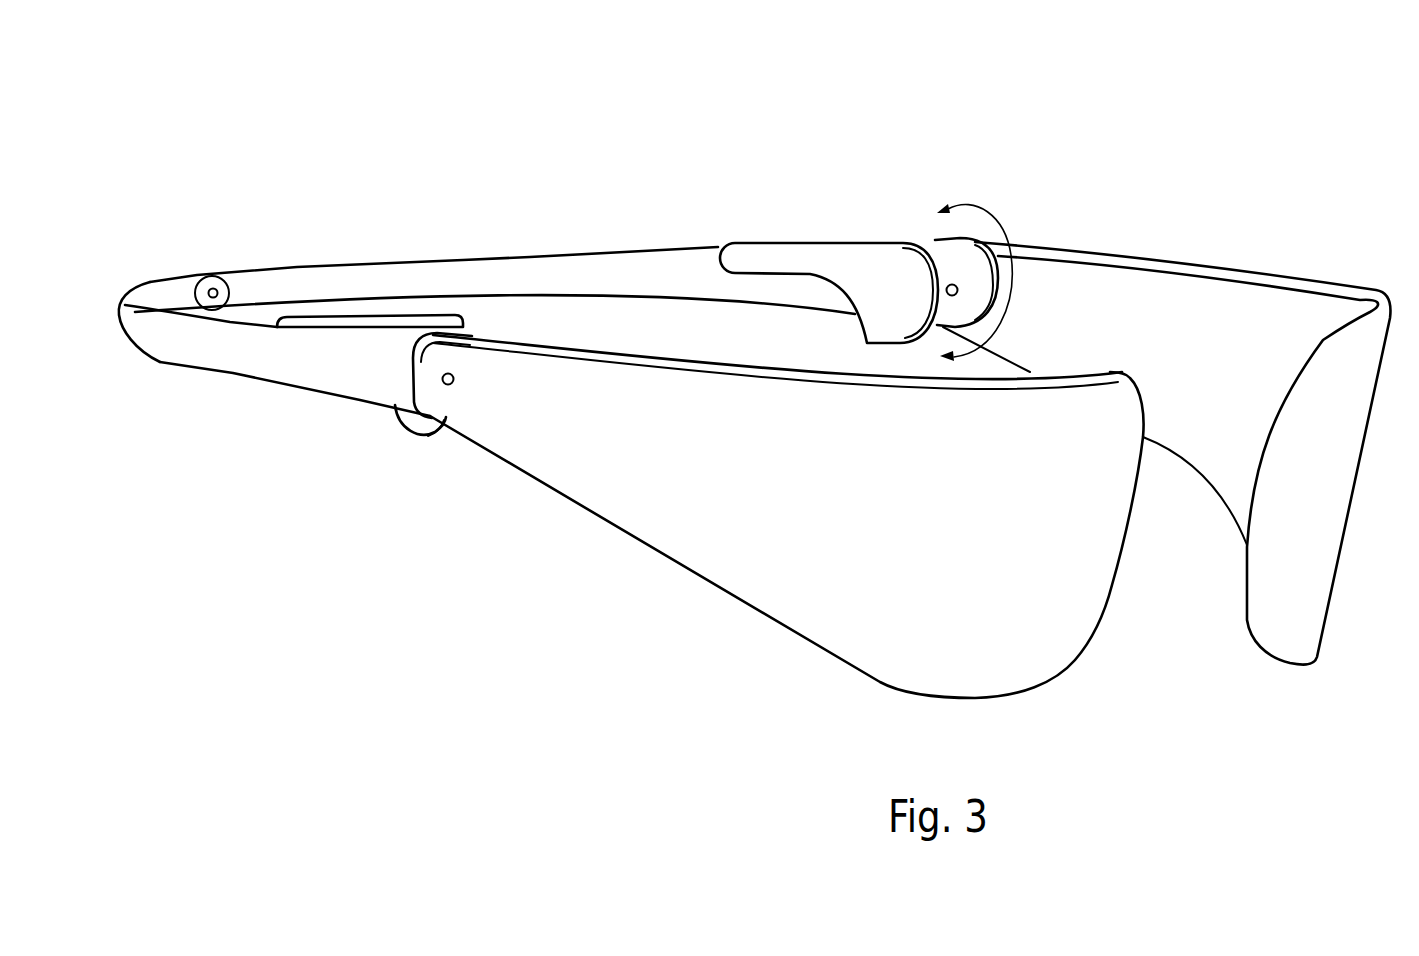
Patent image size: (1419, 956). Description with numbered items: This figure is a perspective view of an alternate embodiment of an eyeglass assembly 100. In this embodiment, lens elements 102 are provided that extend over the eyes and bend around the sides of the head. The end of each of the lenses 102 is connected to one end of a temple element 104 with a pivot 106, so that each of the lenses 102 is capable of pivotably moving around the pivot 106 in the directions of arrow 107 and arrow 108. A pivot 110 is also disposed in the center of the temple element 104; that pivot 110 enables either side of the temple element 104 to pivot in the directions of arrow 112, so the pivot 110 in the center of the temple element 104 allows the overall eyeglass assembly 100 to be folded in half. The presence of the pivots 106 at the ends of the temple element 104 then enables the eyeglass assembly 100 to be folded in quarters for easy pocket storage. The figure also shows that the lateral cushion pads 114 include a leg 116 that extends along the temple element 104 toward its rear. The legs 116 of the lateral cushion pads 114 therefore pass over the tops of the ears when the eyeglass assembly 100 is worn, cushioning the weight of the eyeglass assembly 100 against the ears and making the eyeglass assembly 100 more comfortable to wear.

The eyeglass assembly 100 is at (1104, 130).
The lens elements 102 is at (1267, 625).
The temple element 104 is at (588, 253).
The pivot 106 is at (442, 379).
The arrow 107 is at (996, 227).
The arrow 108 is at (444, 300).
The pivot 110 is at (192, 302).
The arrow 112 is at (177, 291).
The lateral cushion pads 114 is at (875, 302).
The leg 116 is at (335, 320).